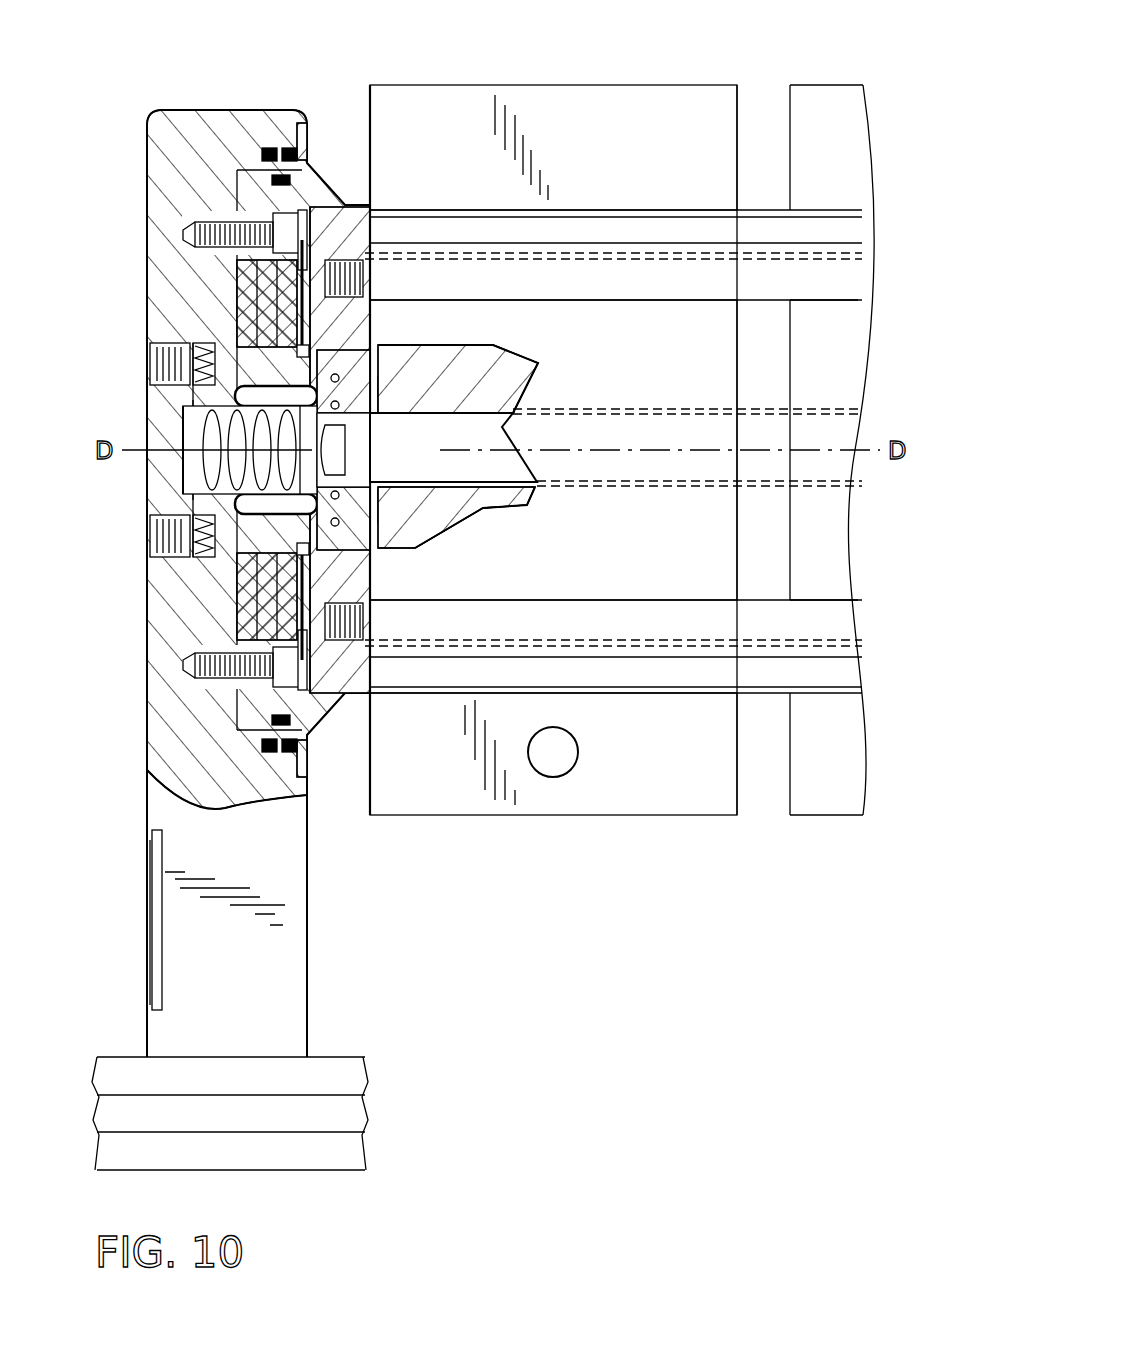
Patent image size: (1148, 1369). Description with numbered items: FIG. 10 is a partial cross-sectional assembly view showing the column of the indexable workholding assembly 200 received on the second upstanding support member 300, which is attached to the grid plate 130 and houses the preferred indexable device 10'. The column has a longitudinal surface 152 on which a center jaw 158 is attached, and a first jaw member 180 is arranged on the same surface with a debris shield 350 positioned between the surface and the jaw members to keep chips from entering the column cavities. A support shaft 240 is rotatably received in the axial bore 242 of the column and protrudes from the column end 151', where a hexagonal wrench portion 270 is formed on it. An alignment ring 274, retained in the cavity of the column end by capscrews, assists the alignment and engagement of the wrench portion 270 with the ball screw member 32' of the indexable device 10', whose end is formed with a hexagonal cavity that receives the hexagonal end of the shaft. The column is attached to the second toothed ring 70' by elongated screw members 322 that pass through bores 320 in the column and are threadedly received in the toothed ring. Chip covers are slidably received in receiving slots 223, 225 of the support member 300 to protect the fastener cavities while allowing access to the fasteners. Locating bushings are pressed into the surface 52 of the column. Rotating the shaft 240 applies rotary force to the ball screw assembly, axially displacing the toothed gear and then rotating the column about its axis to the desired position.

The indexable device 10' is at (258, 459).
The ball screw member 32' is at (204, 467).
The surface 52 is at (833, 212).
The second toothed ring 70' is at (312, 438).
The grid plate 130 is at (338, 1055).
The column end 151' is at (338, 838).
The longitudinal surface 152 is at (852, 695).
The center jaw 158 is at (862, 173).
The first jaw member 180 is at (606, 156).
The workholding assembly 200 is at (695, 65).
The receiving slot 223 is at (158, 830).
The receiving slot 225 is at (160, 1010).
The support shaft 240 is at (828, 463).
The axial bore 242 is at (825, 413).
The hexagonal wrench portion 270 is at (372, 500).
The alignment ring 274 is at (450, 348).
The second upstanding support member 300 is at (313, 990).
The bores 320 is at (598, 252).
The elongated screw members 322 is at (830, 260).
The debris shield 350 is at (750, 210).